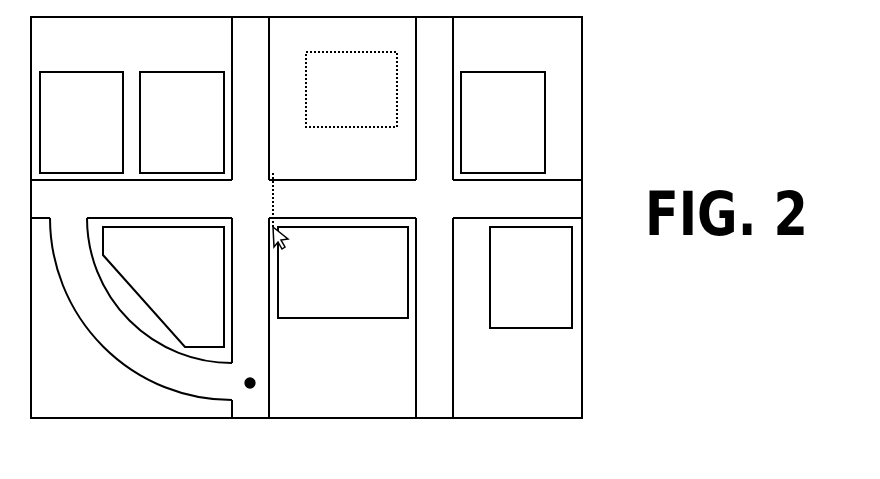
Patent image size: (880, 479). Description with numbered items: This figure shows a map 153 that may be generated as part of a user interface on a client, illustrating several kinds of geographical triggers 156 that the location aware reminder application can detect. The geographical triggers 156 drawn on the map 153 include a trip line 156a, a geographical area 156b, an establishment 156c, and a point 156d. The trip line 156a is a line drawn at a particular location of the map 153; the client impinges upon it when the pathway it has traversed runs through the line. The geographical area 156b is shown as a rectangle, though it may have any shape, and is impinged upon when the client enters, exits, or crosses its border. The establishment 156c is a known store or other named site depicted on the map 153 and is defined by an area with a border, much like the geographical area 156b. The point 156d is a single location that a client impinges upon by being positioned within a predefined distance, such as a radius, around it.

The map 153 is at (582, 140).
The geographical triggers 156 is at (531, 402).
The trip line 156a is at (273, 198).
The geographical area 156b is at (322, 127).
The establishment 156c is at (546, 328).
The point 156d is at (255, 383).